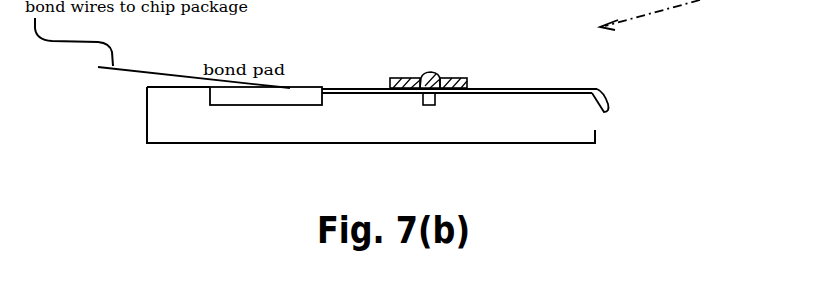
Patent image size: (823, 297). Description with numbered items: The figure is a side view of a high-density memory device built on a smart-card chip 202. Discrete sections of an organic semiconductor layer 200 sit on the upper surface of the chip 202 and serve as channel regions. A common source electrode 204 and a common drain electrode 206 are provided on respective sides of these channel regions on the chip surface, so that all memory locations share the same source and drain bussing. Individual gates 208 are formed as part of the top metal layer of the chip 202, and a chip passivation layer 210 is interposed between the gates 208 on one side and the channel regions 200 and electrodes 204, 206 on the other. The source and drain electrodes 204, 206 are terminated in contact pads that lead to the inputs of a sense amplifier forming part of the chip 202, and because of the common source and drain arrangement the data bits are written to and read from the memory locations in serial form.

The organic semiconductor layer 200 is at (432, 72).
The chip 202 is at (152, 126).
The common source electrode 204 is at (400, 78).
The common drain electrode 206 is at (467, 78).
The gate 208 is at (435, 105).
The chip passivation layer 210 is at (606, 112).